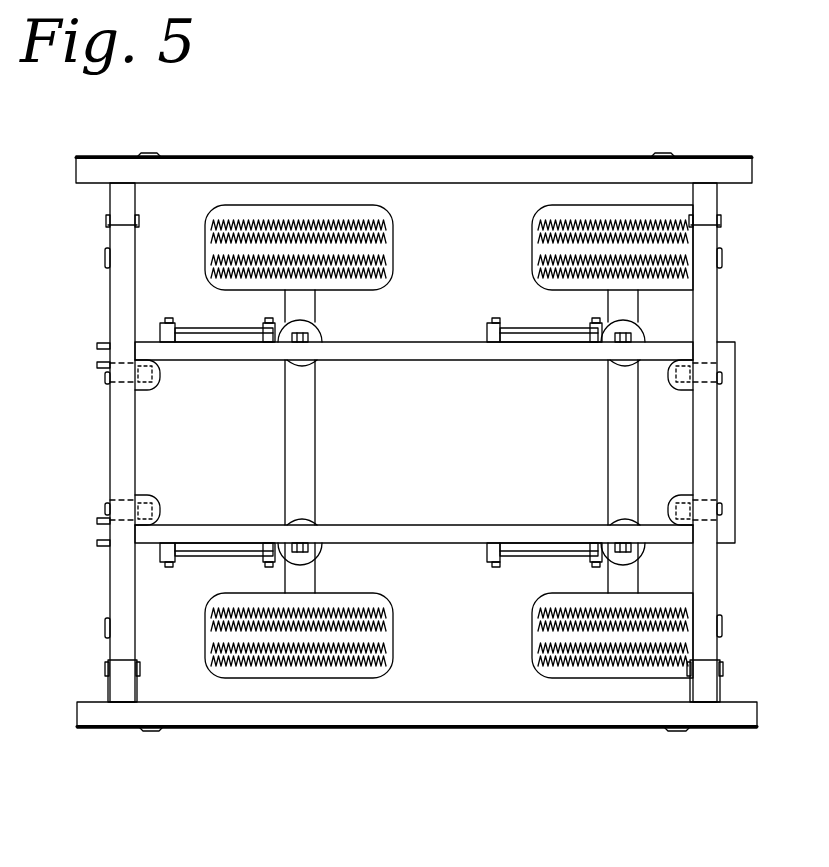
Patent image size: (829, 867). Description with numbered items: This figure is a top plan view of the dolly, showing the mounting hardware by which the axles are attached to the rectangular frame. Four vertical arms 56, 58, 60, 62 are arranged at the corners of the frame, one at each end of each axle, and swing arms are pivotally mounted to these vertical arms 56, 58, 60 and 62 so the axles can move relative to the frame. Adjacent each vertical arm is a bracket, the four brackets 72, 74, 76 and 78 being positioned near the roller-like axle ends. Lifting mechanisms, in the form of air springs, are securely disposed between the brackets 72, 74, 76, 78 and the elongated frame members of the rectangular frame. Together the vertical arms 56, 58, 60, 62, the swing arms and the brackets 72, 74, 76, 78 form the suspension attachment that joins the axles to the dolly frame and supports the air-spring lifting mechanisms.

The vertical arm 56 is at (162, 552).
The vertical arm 58 is at (162, 326).
The vertical arm 60 is at (492, 552).
The vertical arm 62 is at (486, 331).
The bracket 72 is at (267, 562).
The bracket 74 is at (600, 562).
The bracket 76 is at (312, 326).
The bracket 78 is at (598, 325).